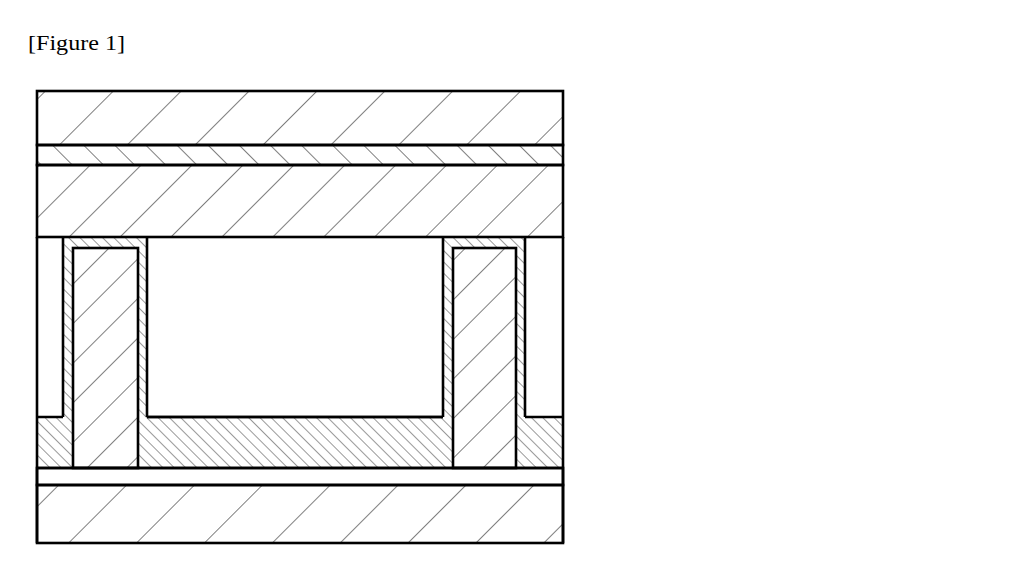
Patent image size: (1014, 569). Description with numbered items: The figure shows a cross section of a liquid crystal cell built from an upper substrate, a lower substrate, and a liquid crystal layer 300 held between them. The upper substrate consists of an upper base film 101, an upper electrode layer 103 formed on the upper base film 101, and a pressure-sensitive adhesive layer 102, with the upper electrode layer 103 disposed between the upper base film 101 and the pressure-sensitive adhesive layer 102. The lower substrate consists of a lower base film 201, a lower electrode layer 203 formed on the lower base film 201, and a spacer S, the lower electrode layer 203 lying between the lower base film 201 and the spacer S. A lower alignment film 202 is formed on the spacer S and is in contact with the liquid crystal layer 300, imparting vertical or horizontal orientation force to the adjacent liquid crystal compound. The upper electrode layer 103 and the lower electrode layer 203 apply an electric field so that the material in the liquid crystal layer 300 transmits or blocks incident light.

The upper base film 101 is at (565, 112).
The pressure-sensitive adhesive layer 102 is at (565, 197).
The upper electrode layer 103 is at (565, 151).
The lower base film 201 is at (565, 507).
The lower alignment film 202 is at (565, 440).
The lower electrode layer 203 is at (565, 473).
The liquid crystal layer 300 is at (420, 363).
The spacer S is at (483, 290).